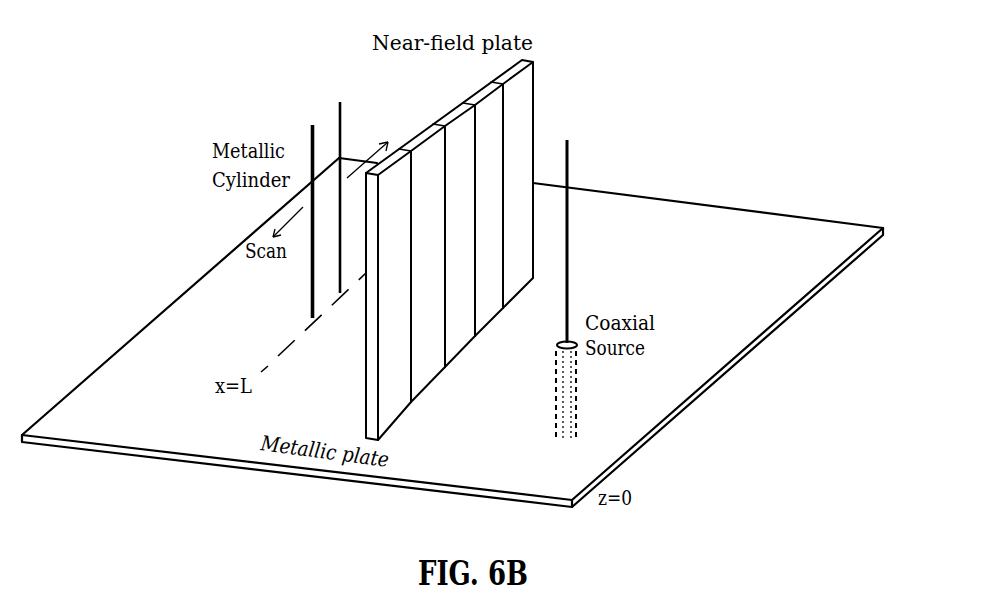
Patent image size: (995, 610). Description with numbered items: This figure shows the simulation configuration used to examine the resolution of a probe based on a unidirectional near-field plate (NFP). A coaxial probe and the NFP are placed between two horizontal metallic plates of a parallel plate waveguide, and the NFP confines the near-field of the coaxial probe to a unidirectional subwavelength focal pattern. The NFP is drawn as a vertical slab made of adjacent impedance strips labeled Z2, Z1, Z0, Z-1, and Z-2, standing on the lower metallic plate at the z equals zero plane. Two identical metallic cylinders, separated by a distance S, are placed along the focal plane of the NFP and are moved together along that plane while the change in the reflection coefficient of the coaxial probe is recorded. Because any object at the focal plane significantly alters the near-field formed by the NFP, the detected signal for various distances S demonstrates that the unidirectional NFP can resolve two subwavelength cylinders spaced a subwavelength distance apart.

The separation distance S is at (337, 100).
The near-field plate impedance strip Z2 is at (394, 294).
The near-field plate impedance strip Z1 is at (428, 263).
The near-field plate impedance strip Z0 is at (460, 235).
The near-field plate impedance strip Z-1 is at (490, 209).
The near-field plate impedance strip Z-2 is at (518, 185).